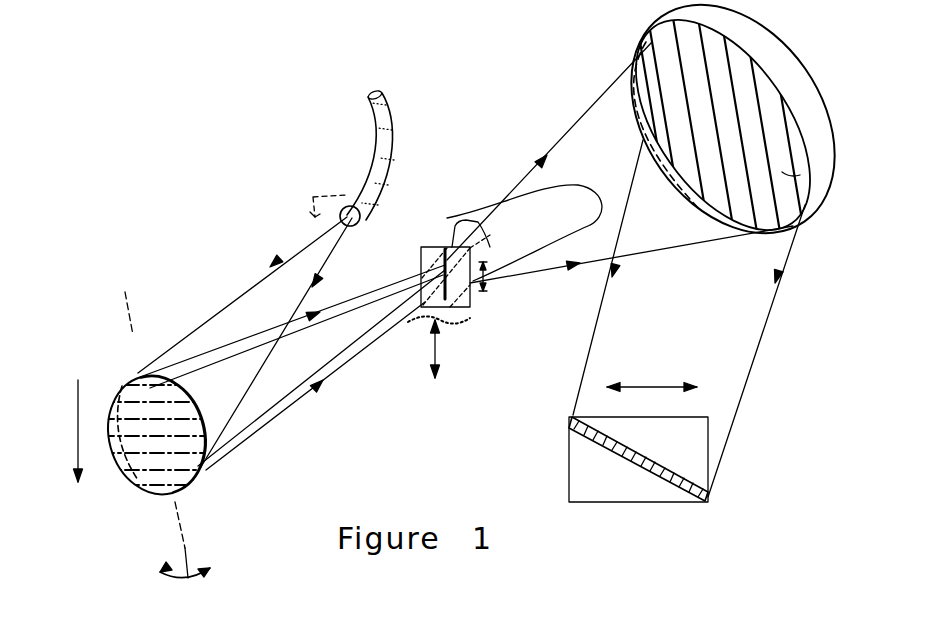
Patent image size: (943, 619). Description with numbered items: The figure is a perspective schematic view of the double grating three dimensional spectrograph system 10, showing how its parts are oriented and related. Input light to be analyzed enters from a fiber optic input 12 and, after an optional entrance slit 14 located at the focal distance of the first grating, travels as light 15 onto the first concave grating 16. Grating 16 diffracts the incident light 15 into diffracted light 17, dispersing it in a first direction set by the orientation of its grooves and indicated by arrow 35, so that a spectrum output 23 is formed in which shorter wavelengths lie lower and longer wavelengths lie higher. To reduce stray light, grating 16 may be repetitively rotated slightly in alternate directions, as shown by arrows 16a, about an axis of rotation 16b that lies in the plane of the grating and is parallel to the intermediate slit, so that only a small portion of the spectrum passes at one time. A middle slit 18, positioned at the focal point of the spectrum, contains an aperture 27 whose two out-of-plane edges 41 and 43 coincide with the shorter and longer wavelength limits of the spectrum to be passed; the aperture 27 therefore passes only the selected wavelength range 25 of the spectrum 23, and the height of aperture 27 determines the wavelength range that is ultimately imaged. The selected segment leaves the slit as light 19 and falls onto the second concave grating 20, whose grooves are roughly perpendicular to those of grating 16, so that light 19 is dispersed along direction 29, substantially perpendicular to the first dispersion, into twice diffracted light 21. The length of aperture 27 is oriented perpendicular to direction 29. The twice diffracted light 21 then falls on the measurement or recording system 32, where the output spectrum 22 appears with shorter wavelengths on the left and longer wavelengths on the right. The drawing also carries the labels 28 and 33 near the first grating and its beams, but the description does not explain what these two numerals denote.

The double grating three dimensional spectrograph system 10 is at (207, 228).
The fiber optic input 12 is at (375, 86).
The entrance slit 14 is at (355, 208).
The light 15 is at (247, 277).
The first concave grating 16 is at (127, 375).
The arrows 16a is at (205, 572).
The axis of rotation 16b is at (125, 307).
The diffracted light 17 is at (283, 447).
The middle slit 18 is at (416, 245).
The light 19 is at (532, 268).
The second concave grating 20 is at (777, 55).
The twice diffracted light 21 is at (743, 375).
The spectrum 22 is at (707, 500).
The spectrum output 23 is at (468, 318).
The selected wavelength range 25 is at (449, 218).
The aperture 27 is at (443, 266).
The dispersion direction 28 is at (60, 439).
The direction 29 is at (635, 377).
The measurement or recording system 32 is at (569, 467).
The return beam 33 is at (347, 223).
The arrow 35 is at (448, 368).
The edge 41 is at (474, 240).
The edge 43 is at (407, 328).